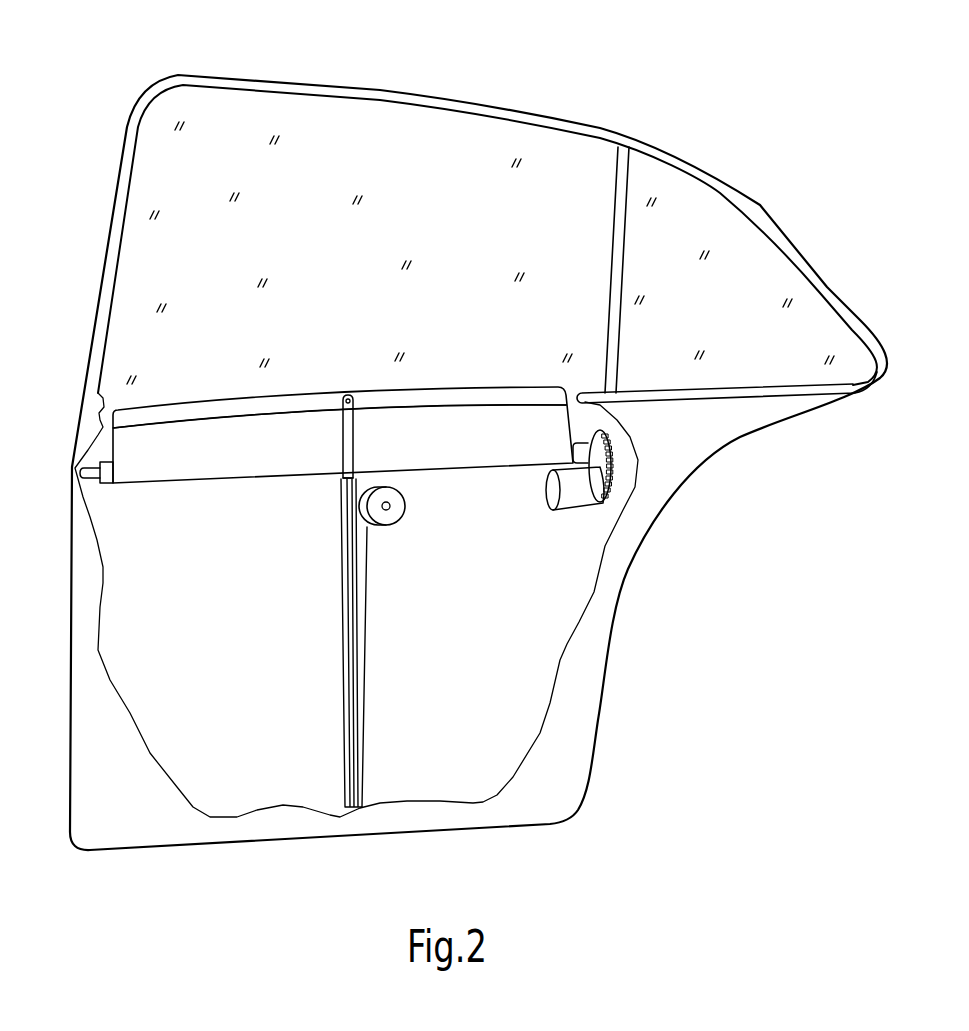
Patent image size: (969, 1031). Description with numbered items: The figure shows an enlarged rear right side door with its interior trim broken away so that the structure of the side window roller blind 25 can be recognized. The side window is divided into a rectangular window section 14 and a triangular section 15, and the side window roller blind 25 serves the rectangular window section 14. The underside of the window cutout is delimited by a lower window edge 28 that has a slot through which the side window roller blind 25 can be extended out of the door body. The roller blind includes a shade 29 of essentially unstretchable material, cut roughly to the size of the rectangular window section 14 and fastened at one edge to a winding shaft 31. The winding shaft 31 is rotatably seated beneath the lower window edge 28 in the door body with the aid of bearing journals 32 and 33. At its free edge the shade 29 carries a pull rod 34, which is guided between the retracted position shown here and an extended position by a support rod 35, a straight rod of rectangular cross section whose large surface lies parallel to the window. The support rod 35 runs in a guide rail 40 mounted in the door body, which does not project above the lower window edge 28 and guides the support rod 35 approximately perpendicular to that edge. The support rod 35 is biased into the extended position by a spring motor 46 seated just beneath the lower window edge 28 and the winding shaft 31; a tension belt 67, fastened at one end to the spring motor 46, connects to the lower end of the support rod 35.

The rectangular window section 14 is at (455, 160).
The triangular section 15 is at (697, 217).
The side window roller blind 25 is at (428, 357).
The lower window edge 28 is at (700, 387).
The shade 29 is at (328, 437).
The winding shaft 31 is at (100, 482).
The bearing journal 32 is at (75, 467).
The bearing journal 33 is at (613, 448).
The pull rod 34 is at (178, 408).
The support rod 35 is at (348, 452).
The guide rail 40 is at (343, 643).
The spring motor 46 is at (398, 523).
The tension belt 67 is at (367, 623).